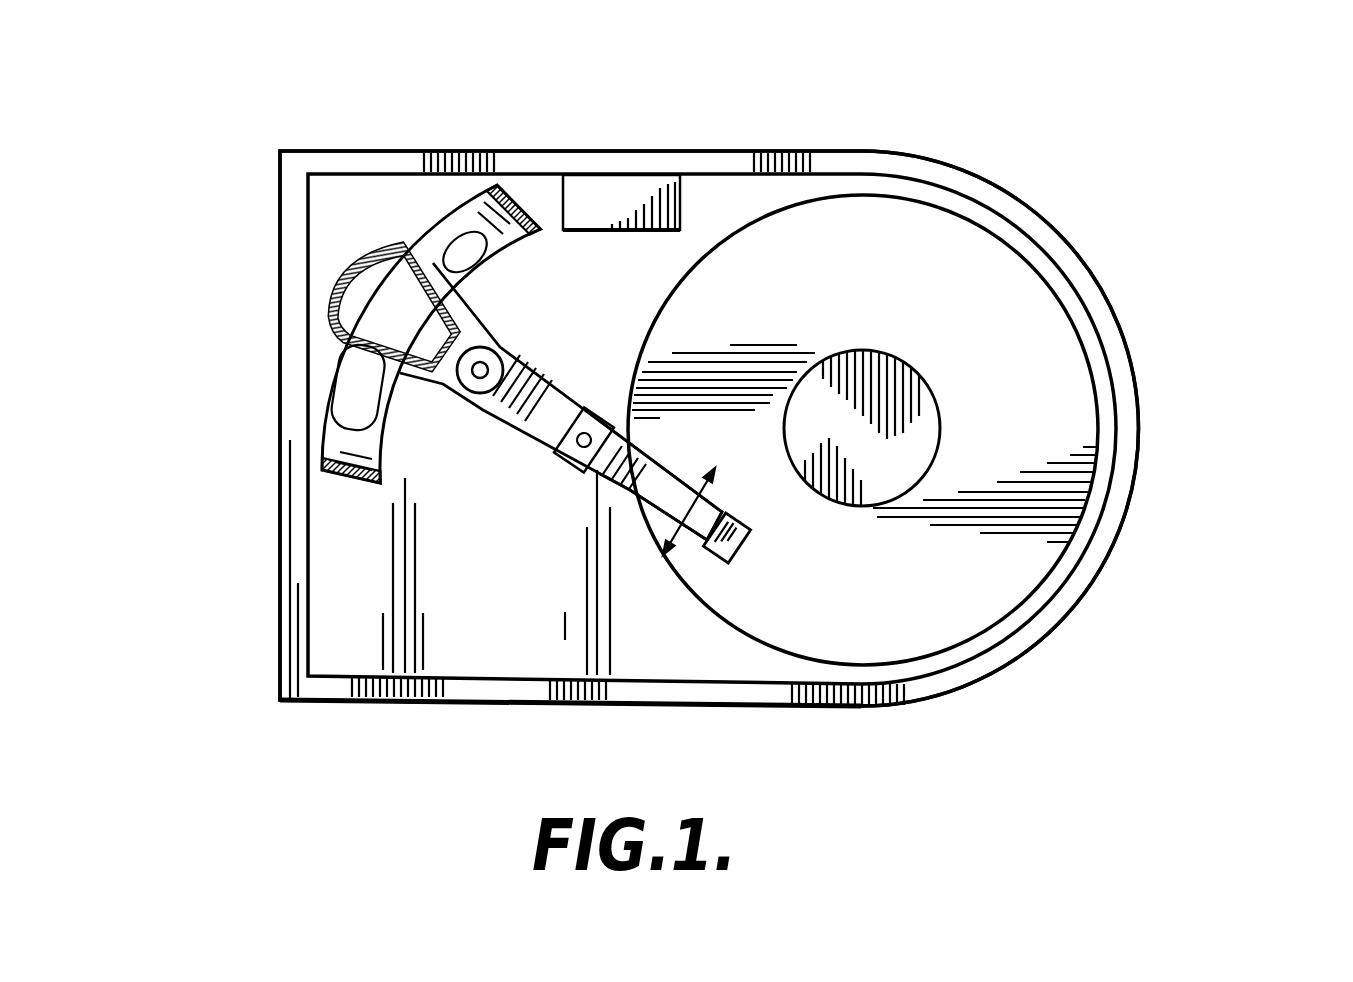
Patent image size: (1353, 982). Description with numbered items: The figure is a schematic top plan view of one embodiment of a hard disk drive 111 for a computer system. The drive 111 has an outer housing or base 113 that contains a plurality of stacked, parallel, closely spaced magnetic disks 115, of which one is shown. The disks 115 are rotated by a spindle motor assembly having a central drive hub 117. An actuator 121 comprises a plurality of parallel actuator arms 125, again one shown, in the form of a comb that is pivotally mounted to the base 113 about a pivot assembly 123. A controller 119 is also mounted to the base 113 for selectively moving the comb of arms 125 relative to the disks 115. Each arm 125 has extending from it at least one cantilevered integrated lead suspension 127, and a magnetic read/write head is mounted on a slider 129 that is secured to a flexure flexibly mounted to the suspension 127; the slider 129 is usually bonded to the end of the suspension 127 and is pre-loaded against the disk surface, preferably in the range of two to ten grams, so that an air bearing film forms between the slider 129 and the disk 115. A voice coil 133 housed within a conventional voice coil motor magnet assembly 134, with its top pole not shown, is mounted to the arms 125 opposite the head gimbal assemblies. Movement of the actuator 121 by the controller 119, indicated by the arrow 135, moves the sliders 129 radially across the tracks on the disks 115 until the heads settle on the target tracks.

The hard disk drive 111 is at (1078, 172).
The base 113 is at (803, 157).
The magnetic disk 115 is at (1058, 352).
The central drive hub 117 is at (890, 353).
The controller 119 is at (603, 188).
The actuator 121 is at (508, 542).
The pivot assembly 123 is at (503, 351).
The actuator arm 125 is at (548, 377).
The integrated lead suspension 127 is at (658, 470).
The slider 129 is at (748, 550).
The voice coil 133 is at (338, 275).
The voice coil motor magnet assembly 134 is at (488, 238).
The arrow 135 is at (688, 511).